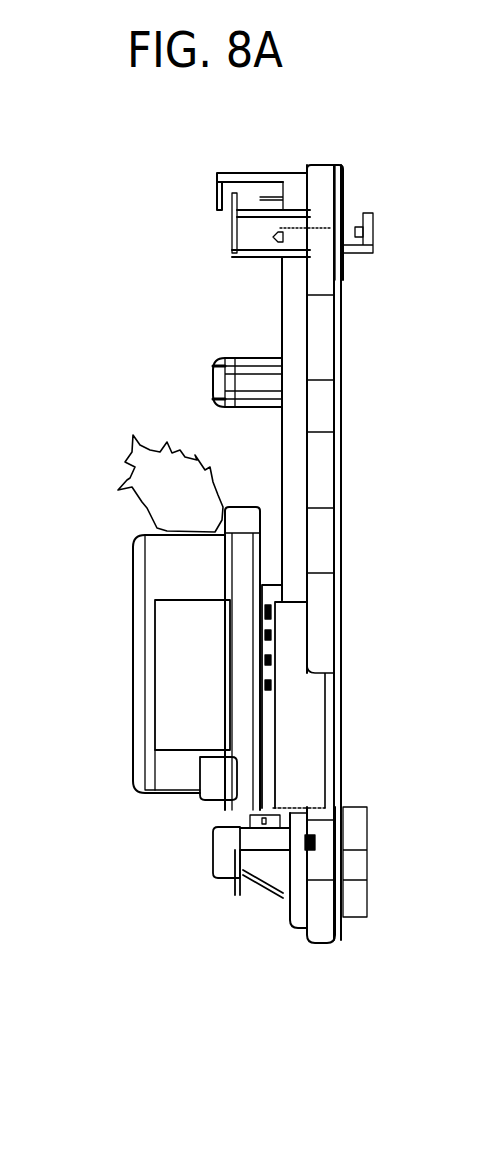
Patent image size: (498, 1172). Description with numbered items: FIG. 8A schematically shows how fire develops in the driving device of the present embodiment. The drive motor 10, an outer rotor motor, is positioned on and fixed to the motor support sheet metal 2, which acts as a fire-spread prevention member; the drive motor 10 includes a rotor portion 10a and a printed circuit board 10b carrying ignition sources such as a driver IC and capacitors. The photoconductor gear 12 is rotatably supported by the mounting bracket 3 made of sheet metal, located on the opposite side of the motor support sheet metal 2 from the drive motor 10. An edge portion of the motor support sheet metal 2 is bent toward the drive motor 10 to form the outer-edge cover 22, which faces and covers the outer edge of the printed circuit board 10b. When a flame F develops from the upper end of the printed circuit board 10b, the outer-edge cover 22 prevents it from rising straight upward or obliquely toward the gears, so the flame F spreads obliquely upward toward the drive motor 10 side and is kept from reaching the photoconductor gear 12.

The mounting bracket 3 is at (343, 180).
The photoconductor gear 12 is at (282, 300).
The motor support sheet metal 2 is at (262, 548).
The outer-edge cover 22 is at (240, 578).
The drive motor 10 is at (120, 690).
The rotor portion 10a is at (133, 660).
The printed circuit board 10b is at (233, 690).
The flame F is at (133, 438).